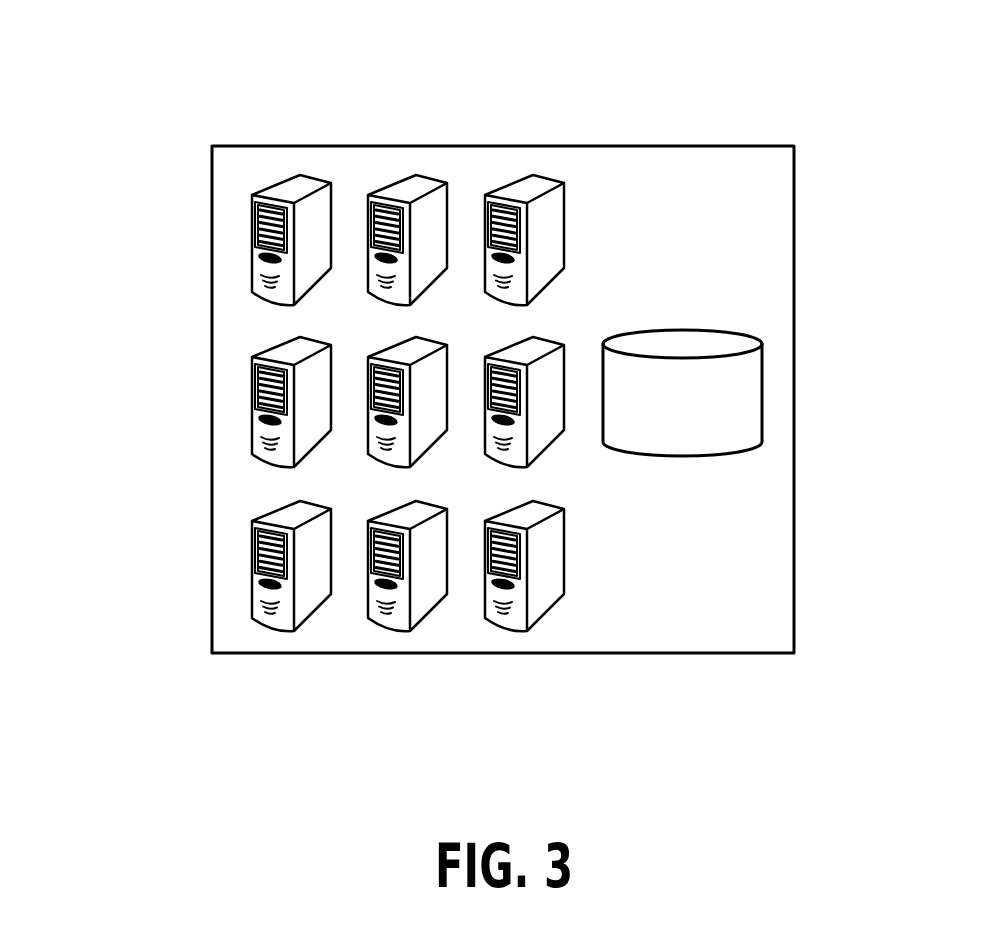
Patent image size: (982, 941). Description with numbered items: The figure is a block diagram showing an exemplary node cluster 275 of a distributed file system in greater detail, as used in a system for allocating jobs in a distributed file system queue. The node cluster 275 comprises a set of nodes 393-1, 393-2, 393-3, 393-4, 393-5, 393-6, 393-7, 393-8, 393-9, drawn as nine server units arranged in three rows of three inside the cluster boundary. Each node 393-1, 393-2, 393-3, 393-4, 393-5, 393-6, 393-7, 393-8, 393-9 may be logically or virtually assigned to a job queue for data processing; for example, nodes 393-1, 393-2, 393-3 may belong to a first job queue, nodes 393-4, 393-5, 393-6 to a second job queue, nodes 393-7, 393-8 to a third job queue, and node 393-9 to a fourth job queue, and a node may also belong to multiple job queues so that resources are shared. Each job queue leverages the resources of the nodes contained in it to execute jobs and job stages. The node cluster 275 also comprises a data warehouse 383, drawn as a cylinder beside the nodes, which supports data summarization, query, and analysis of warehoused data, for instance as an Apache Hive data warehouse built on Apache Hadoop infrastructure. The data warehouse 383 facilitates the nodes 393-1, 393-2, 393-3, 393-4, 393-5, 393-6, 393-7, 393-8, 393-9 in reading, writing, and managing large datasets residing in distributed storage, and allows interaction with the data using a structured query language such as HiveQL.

The node cluster 275 is at (138, 74).
The node 393-1 is at (252, 243).
The node 393-2 is at (252, 401).
The node 393-3 is at (252, 575).
The node 393-4 is at (430, 178).
The node 393-5 is at (450, 368).
The node 393-6 is at (448, 533).
The node 393-7 is at (565, 237).
The node 393-8 is at (600, 327).
The node 393-9 is at (565, 568).
The data warehouse 383 is at (755, 398).